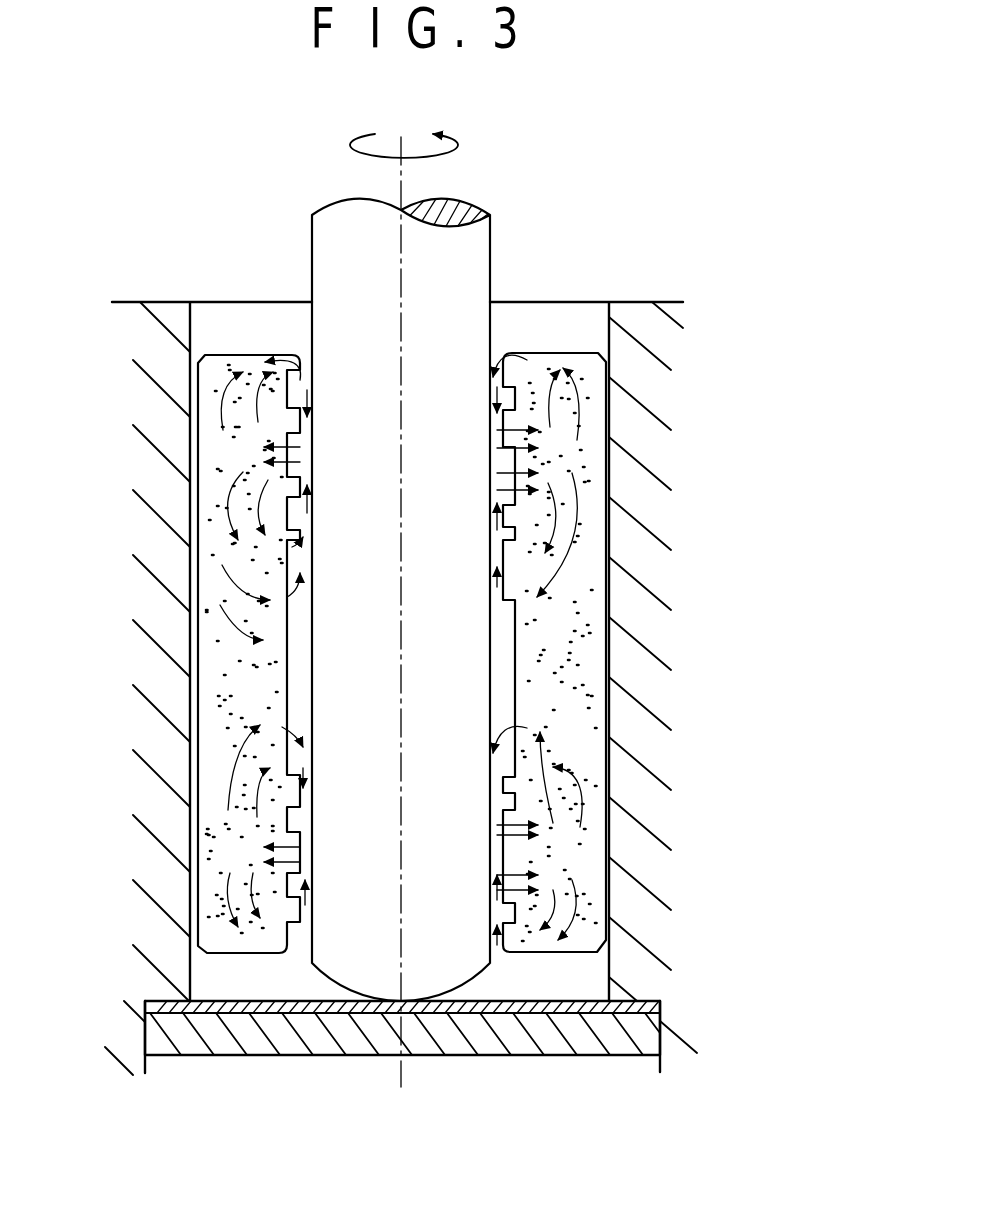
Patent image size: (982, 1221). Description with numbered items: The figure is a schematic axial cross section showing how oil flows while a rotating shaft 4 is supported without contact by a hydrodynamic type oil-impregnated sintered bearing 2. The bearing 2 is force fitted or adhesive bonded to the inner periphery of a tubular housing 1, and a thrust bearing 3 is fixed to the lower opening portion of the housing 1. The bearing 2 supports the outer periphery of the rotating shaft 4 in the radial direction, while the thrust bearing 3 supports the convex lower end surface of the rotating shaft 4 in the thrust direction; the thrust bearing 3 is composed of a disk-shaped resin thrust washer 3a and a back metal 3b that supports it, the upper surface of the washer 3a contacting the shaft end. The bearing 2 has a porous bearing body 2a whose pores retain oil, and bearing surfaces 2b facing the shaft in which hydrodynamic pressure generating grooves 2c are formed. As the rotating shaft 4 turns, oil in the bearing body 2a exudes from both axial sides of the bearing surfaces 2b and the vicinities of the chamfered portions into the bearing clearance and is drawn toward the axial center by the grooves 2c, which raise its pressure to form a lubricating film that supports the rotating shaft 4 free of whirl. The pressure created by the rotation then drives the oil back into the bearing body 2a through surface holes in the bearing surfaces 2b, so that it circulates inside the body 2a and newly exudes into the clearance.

The tubular housing 1 is at (134, 312).
The hydrodynamic type oil-impregnated sintered bearing 2 is at (347, 568).
The bearing body 2a is at (208, 500).
The bearing surfaces 2b is at (310, 433).
The hydrodynamic pressure generating grooves 2c is at (294, 483).
The thrust bearing 3 is at (402, 1061).
The resin thrust washer 3a is at (490, 1001).
The back metal 3b is at (463, 1043).
The rotating shaft 4 is at (330, 222).